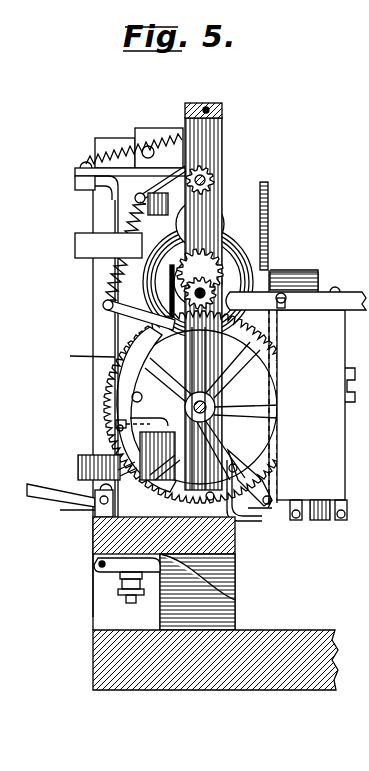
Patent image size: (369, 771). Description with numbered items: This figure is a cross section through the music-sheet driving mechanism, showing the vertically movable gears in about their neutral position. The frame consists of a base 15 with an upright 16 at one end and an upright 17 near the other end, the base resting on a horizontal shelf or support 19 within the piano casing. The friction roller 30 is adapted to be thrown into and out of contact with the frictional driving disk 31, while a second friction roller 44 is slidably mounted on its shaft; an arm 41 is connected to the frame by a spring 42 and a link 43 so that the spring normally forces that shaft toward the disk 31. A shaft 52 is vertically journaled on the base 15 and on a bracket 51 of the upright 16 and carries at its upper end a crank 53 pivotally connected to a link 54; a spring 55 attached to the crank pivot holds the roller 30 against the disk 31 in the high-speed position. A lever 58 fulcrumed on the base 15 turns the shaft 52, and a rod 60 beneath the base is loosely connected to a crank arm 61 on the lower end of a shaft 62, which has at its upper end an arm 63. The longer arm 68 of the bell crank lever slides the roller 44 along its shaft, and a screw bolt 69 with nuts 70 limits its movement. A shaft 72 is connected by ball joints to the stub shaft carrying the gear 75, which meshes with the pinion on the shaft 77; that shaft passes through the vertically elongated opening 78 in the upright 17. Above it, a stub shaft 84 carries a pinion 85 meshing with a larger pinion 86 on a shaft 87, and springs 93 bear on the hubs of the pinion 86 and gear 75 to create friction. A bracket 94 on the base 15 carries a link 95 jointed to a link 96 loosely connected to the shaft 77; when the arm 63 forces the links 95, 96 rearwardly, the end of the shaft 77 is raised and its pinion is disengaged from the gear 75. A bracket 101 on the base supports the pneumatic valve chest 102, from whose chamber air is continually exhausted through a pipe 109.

The base 15 is at (93, 537).
The upright 16 is at (120, 392).
The upright 17 is at (222, 120).
The horizontal shelf or support 19 is at (93, 646).
The friction roller 30 is at (153, 201).
The frictional driving disk 31 is at (268, 231).
The arm 41 is at (108, 301).
The spring 42 is at (128, 221).
The link 43 is at (140, 182).
The friction roller 44 is at (150, 285).
The bracket 51 is at (75, 237).
The shaft 52 is at (112, 316).
The crank 53 is at (74, 172).
The link 54 is at (125, 152).
The spring 55 is at (130, 147).
The lever 58 is at (65, 499).
The rod 60 is at (120, 576).
The crank arm 61 is at (98, 564).
The shaft 62 is at (236, 597).
The arm 63 is at (116, 425).
The longer arm of bell crank lever 68 is at (78, 463).
The screw bolt 69 is at (128, 600).
The nuts 70 is at (122, 588).
The shaft 72 is at (130, 414).
The gear 75 is at (148, 331).
The shaft 77 is at (240, 292).
The vertically elongated opening 78 is at (220, 268).
The stub shaft 84 is at (212, 172).
The pinion 85 is at (206, 180).
The larger pinion 86 is at (268, 191).
The shaft 87 is at (268, 213).
The spring 93 is at (150, 362).
The bracket 94 is at (230, 512).
The link 95 is at (145, 442).
The link 96 is at (190, 353).
The bracket 101 is at (280, 515).
The pneumatic valve chest 102 is at (312, 385).
The pipe 109 is at (320, 520).